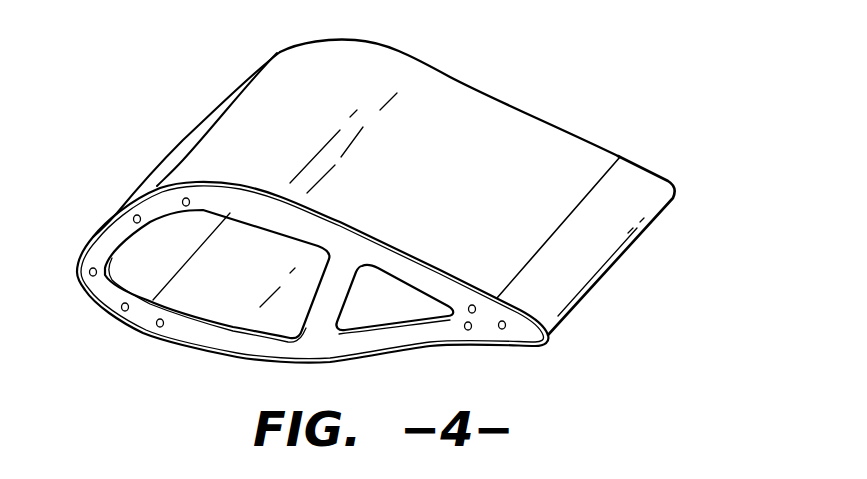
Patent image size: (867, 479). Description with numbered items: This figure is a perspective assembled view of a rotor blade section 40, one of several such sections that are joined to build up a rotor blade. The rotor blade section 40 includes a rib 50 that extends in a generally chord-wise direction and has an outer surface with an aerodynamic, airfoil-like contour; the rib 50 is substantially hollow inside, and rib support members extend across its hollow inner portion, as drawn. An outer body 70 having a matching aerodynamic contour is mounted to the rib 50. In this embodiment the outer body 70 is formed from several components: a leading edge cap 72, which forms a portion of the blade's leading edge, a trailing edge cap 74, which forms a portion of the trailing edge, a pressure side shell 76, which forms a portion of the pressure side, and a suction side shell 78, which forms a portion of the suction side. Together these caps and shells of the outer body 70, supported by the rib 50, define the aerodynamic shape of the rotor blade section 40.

The rotor blade section 40 is at (618, 75).
The rib 50 is at (222, 338).
The outer body 70 is at (172, 98).
The leading edge cap 72 is at (157, 172).
The trailing edge cap 74 is at (602, 245).
The pressure side shell 76 is at (143, 330).
The suction side shell 78 is at (447, 100).